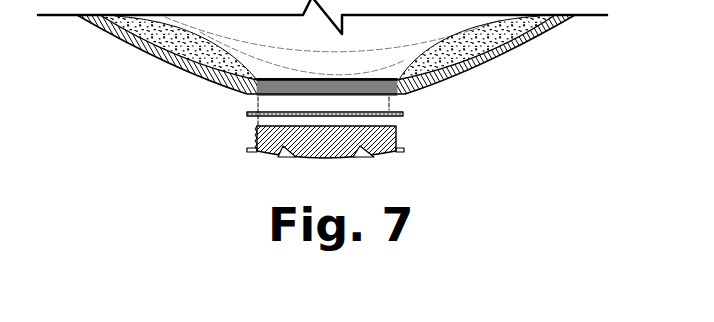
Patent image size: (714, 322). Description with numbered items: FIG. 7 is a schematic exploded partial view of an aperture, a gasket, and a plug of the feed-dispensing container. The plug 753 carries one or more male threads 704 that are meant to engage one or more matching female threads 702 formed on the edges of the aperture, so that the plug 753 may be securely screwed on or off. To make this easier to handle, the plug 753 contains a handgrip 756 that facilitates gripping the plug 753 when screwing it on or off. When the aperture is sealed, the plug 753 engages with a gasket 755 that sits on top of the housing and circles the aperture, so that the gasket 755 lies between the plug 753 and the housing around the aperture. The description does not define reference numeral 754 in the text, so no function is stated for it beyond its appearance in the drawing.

The female threads 702 is at (277, 90).
The male threads 704 is at (255, 137).
The plug 753 is at (324, 140).
The filler material 754 is at (490, 40).
The gasket 755 is at (372, 113).
The handgrip 756 is at (290, 155).